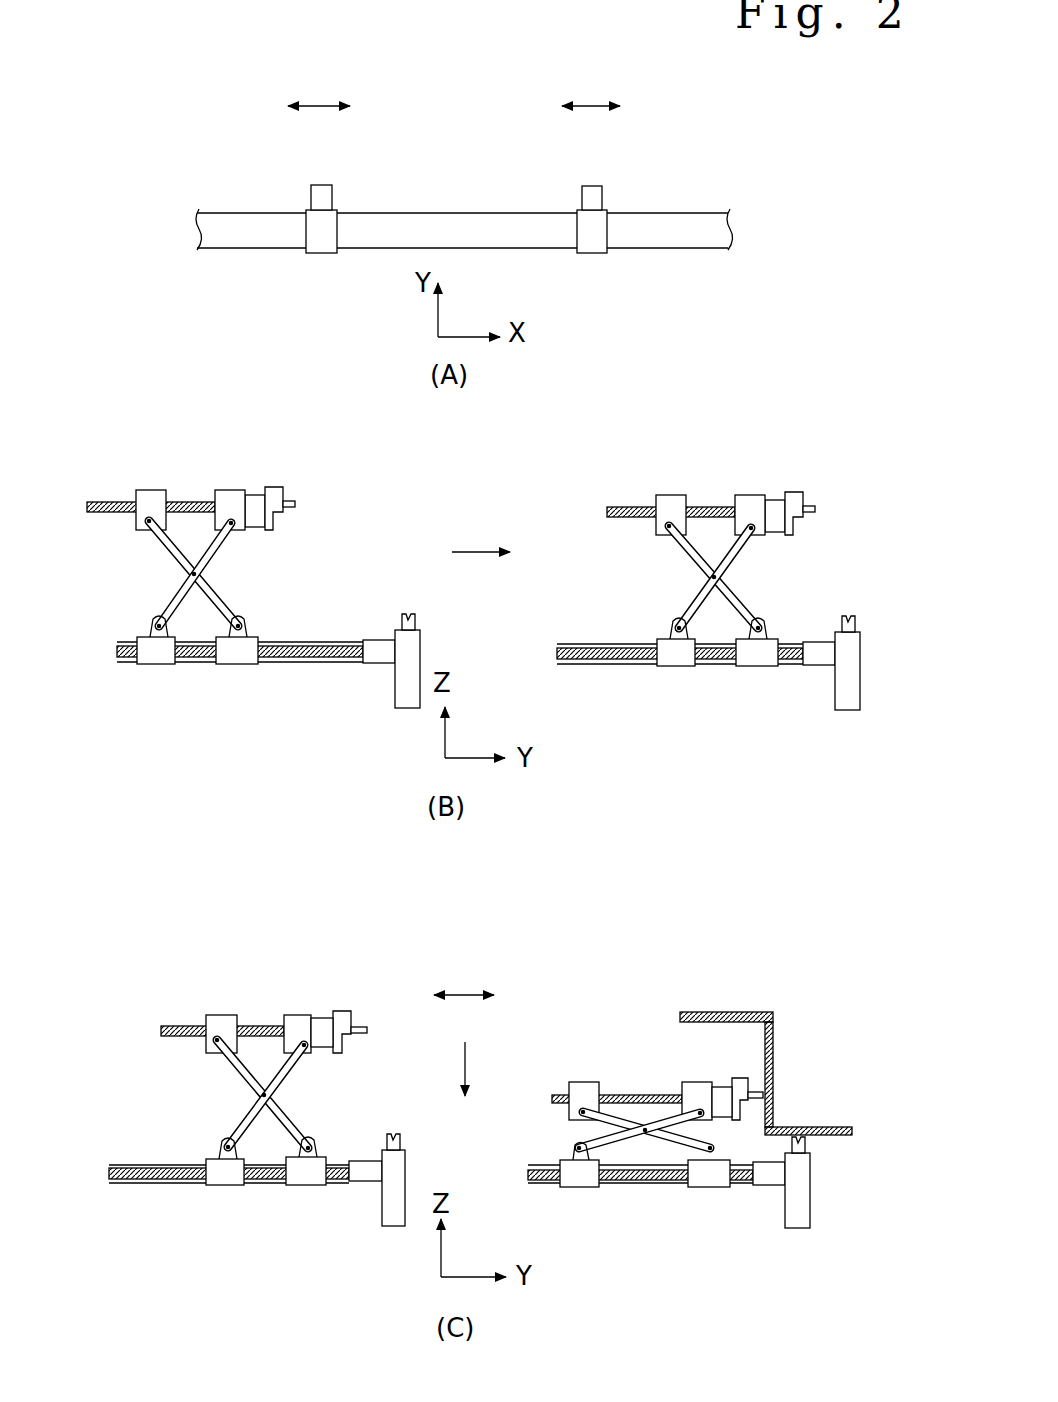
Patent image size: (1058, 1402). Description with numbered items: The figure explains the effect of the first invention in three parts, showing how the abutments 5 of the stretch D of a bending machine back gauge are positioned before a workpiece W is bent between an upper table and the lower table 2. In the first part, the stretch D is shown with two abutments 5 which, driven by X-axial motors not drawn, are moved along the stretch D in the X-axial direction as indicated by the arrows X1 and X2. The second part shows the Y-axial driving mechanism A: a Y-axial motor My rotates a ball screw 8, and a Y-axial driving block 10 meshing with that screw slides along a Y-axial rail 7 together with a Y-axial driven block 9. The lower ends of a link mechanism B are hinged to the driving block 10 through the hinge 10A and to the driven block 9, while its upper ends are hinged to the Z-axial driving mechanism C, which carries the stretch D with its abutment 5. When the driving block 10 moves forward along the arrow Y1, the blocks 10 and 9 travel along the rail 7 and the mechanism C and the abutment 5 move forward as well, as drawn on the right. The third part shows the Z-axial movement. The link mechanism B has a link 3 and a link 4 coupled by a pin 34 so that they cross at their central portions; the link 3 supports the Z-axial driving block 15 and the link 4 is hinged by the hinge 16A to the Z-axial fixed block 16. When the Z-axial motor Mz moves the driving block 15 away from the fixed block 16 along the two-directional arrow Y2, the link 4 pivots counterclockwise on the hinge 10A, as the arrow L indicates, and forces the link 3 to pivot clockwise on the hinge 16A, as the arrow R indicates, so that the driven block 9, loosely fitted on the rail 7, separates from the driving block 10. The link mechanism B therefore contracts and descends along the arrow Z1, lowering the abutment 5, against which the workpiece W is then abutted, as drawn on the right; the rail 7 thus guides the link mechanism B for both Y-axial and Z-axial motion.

The lower table 2 is at (403, 683).
The link 3 is at (290, 1073).
The link 4 is at (241, 1071).
The abutment 5 is at (323, 195).
The Y-axial rail 7 is at (200, 648).
The ball screw 8 is at (298, 645).
The Y-axial driven block 9 is at (157, 658).
The Y-axial driving block 10 is at (233, 654).
The hinge 10A is at (309, 1143).
The Z-axial driving block 15 is at (221, 1015).
The Z-axial fixed block 16 is at (297, 1015).
The hinge 16A is at (309, 1053).
The pin 34 is at (270, 1094).
The Y-axial driving mechanism A is at (448, 949).
The link mechanism B is at (420, 841).
The Z-axial driving mechanism C is at (147, 470).
The stretch D is at (687, 207).
The arrow L is at (138, 1089).
The arrow R is at (143, 1111).
The workpiece W is at (825, 1127).
The Y-axial motor My is at (378, 647).
The Z-axial motor Mz is at (322, 1026).
The arrow X1 is at (318, 106).
The arrow X2 is at (594, 106).
The arrow Y1 is at (472, 552).
The two-directional arrow Y2 is at (468, 995).
The arrow Z1 is at (469, 1075).